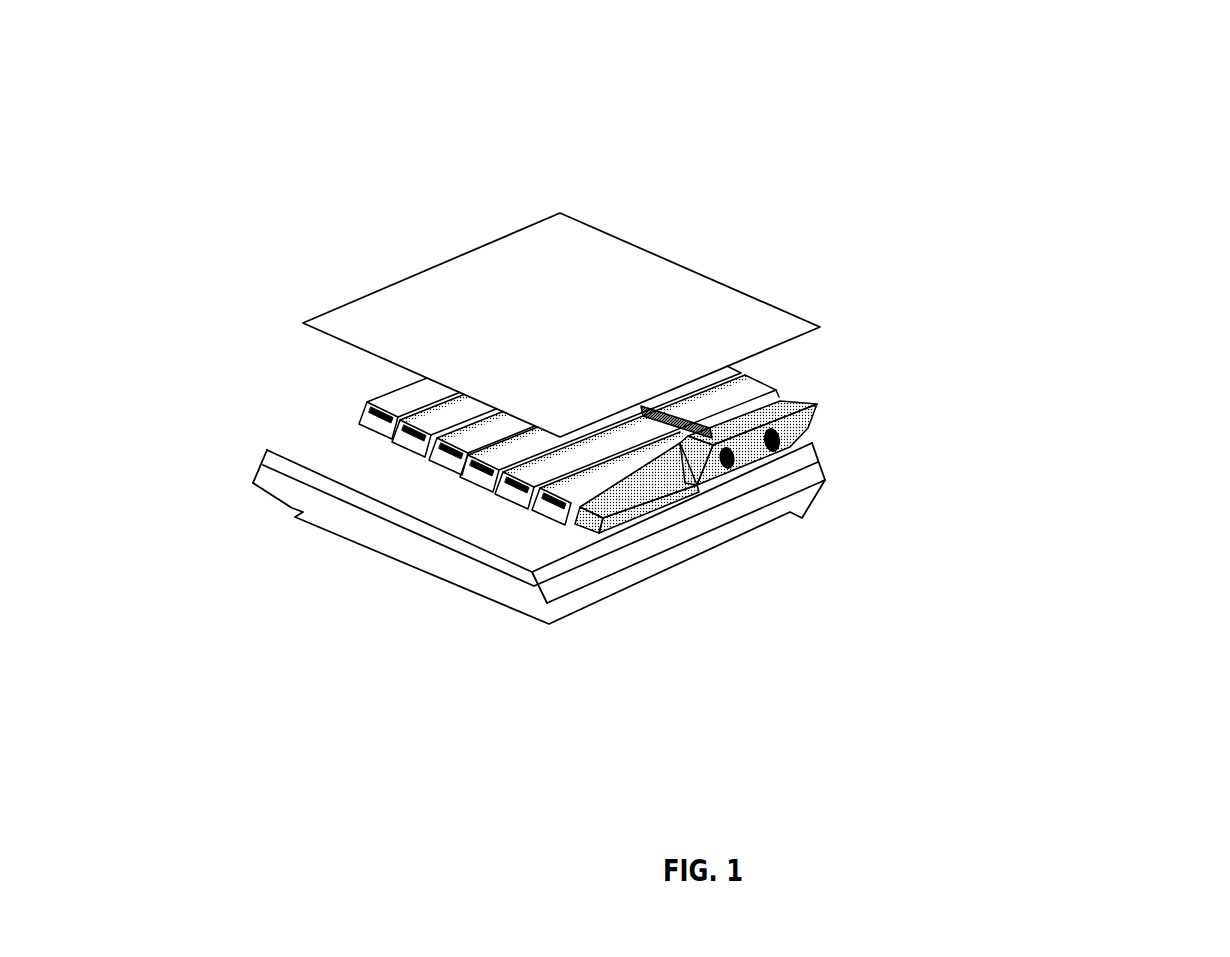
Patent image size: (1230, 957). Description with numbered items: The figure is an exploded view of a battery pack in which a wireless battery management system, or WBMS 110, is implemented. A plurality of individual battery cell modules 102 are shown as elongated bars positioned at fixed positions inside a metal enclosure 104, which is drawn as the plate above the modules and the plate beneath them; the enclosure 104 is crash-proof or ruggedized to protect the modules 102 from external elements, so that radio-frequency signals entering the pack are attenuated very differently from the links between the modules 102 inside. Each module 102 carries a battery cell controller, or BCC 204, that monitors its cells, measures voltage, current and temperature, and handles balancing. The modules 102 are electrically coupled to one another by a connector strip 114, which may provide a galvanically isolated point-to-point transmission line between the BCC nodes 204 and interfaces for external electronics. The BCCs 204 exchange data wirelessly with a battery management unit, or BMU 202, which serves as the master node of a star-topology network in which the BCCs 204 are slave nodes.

The wireless battery management system (WBMS) 110 is at (653, 400).
The metal enclosure 104 is at (447, 261).
The battery cell module 102 is at (362, 407).
The battery cell controller (BCC) 204 is at (377, 417).
The battery management unit (BMU) 202 is at (620, 530).
The connector strip 114 is at (797, 437).